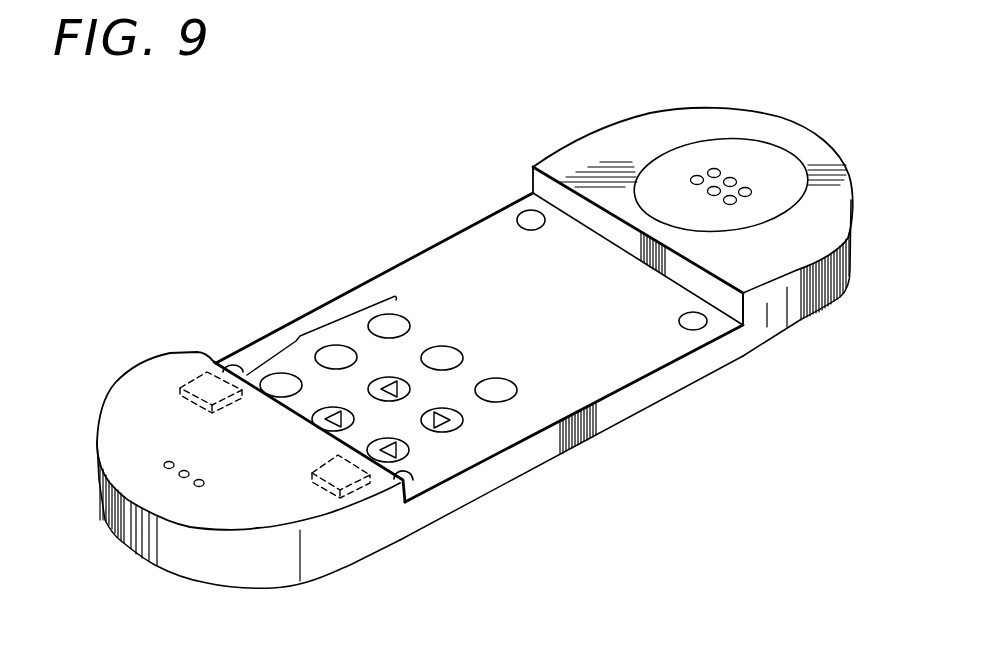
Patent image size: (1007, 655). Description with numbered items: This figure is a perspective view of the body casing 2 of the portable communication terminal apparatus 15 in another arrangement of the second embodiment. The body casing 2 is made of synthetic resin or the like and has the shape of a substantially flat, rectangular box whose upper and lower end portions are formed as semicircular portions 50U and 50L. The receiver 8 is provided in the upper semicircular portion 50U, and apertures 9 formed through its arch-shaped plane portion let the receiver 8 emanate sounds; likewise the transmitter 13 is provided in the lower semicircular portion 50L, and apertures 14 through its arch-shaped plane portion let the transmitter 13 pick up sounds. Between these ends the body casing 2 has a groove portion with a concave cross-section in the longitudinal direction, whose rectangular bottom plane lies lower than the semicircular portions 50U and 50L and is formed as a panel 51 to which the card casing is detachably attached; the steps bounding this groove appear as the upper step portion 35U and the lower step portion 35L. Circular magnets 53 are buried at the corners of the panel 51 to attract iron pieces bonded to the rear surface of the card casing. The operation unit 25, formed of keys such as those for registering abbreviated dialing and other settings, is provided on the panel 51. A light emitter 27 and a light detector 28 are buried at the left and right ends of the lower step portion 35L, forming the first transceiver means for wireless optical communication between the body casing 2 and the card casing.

The portable communication terminal apparatus 15 is at (333, 155).
The body casing 2 is at (852, 258).
The receiver 8 is at (727, 153).
The apertures 9 is at (750, 190).
The transmitter 13 is at (223, 500).
The apertures 14 is at (163, 464).
The operation unit 25 is at (300, 333).
The light emitter 27 is at (180, 373).
The light detector 28 is at (328, 492).
The lower step portion 35L is at (214, 358).
The upper step portion 35U is at (533, 166).
The lower semicircular portion 50L is at (163, 543).
The upper semicircular portion 50U is at (790, 142).
The panel 51 is at (441, 268).
The circular magnets 53 is at (701, 329).